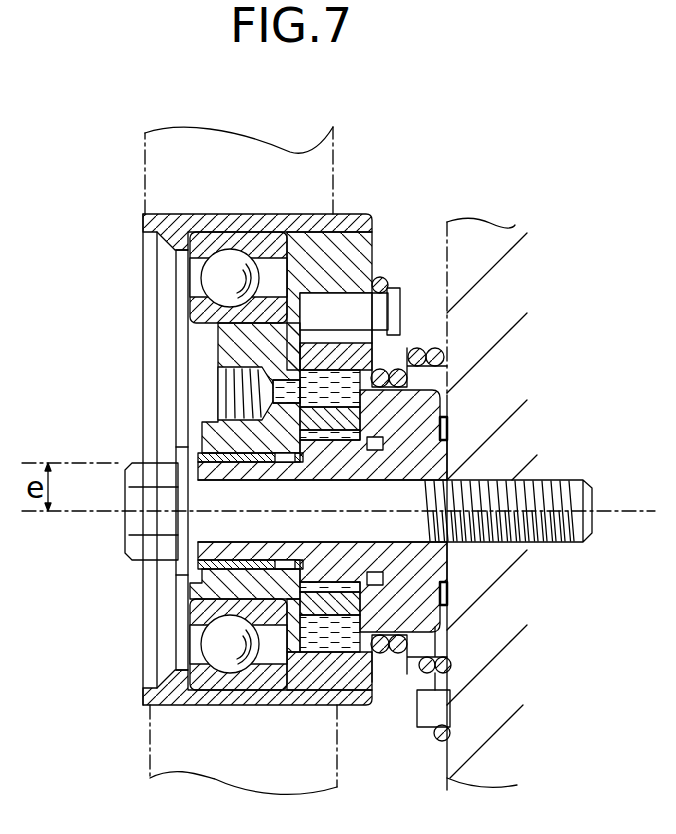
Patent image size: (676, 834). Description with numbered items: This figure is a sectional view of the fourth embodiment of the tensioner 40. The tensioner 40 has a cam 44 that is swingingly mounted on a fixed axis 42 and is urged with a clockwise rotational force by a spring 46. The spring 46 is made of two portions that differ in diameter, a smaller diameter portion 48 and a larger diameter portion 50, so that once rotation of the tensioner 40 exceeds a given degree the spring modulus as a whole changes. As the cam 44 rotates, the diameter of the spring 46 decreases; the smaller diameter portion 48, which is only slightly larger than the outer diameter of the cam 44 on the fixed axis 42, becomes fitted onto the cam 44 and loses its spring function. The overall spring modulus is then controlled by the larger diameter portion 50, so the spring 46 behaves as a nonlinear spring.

The tensioner 40 is at (130, 237).
The fixed axis 42 is at (137, 522).
The cam 44 is at (176, 222).
The spring 46 is at (452, 667).
The smaller diameter portion 48 is at (430, 649).
The larger diameter portion 50 is at (425, 669).